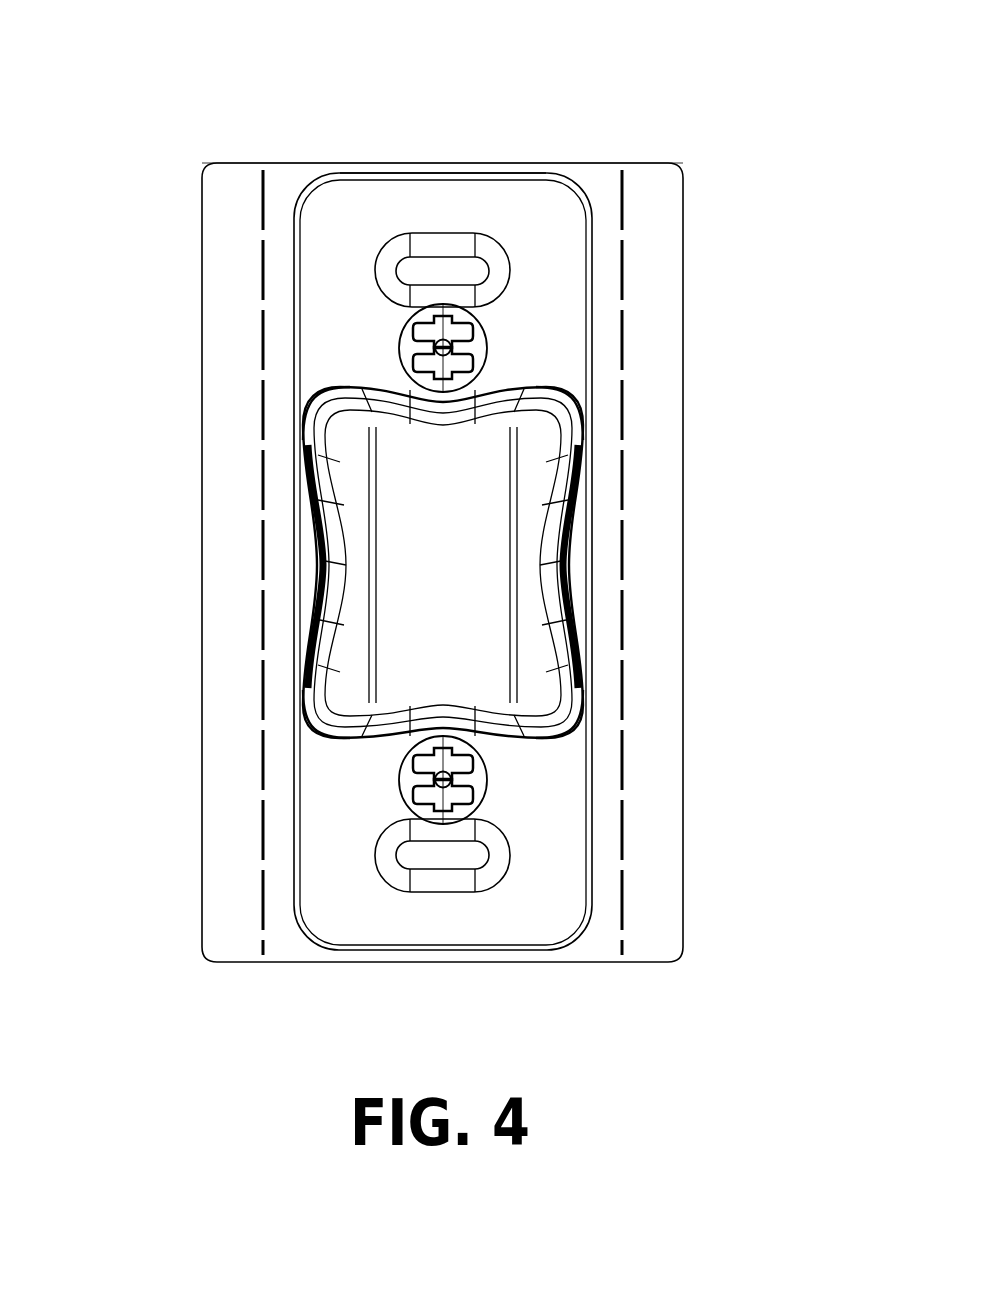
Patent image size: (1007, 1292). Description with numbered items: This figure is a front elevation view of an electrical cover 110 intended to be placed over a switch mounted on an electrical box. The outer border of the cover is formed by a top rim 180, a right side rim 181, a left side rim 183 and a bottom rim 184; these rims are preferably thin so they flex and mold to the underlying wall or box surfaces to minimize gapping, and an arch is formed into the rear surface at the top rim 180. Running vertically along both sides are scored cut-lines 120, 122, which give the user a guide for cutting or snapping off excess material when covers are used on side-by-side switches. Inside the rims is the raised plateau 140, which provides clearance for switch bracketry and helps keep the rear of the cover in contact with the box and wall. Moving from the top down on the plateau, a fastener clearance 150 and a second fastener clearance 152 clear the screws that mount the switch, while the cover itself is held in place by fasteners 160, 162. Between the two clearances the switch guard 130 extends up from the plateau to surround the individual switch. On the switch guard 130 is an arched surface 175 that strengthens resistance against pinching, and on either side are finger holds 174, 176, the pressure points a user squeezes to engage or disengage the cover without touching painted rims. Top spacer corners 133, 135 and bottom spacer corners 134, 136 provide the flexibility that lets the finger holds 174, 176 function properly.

The electrical cover 110 is at (691, 1057).
The scored cut-line 120 is at (453, 571).
The scored cut-line 122 is at (611, 120).
The switch guard 130 is at (438, 537).
The top spacer corner 133 is at (312, 400).
The bottom spacer corner 134 is at (330, 738).
The top spacer corner 135 is at (560, 390).
The bottom spacer corner 136 is at (555, 738).
The raised plateau 140 is at (397, 175).
The fastener clearance 150 is at (492, 245).
The second fastener clearance 152 is at (423, 888).
The fastener 160 is at (399, 347).
The fastener 162 is at (400, 771).
The finger hold 174 is at (302, 570).
The arched surface 175 is at (443, 565).
The finger hold 176 is at (582, 570).
The top rim 180 is at (650, 163).
The right side rim 181 is at (680, 465).
The left side rim 183 is at (202, 245).
The bottom rim 184 is at (518, 960).